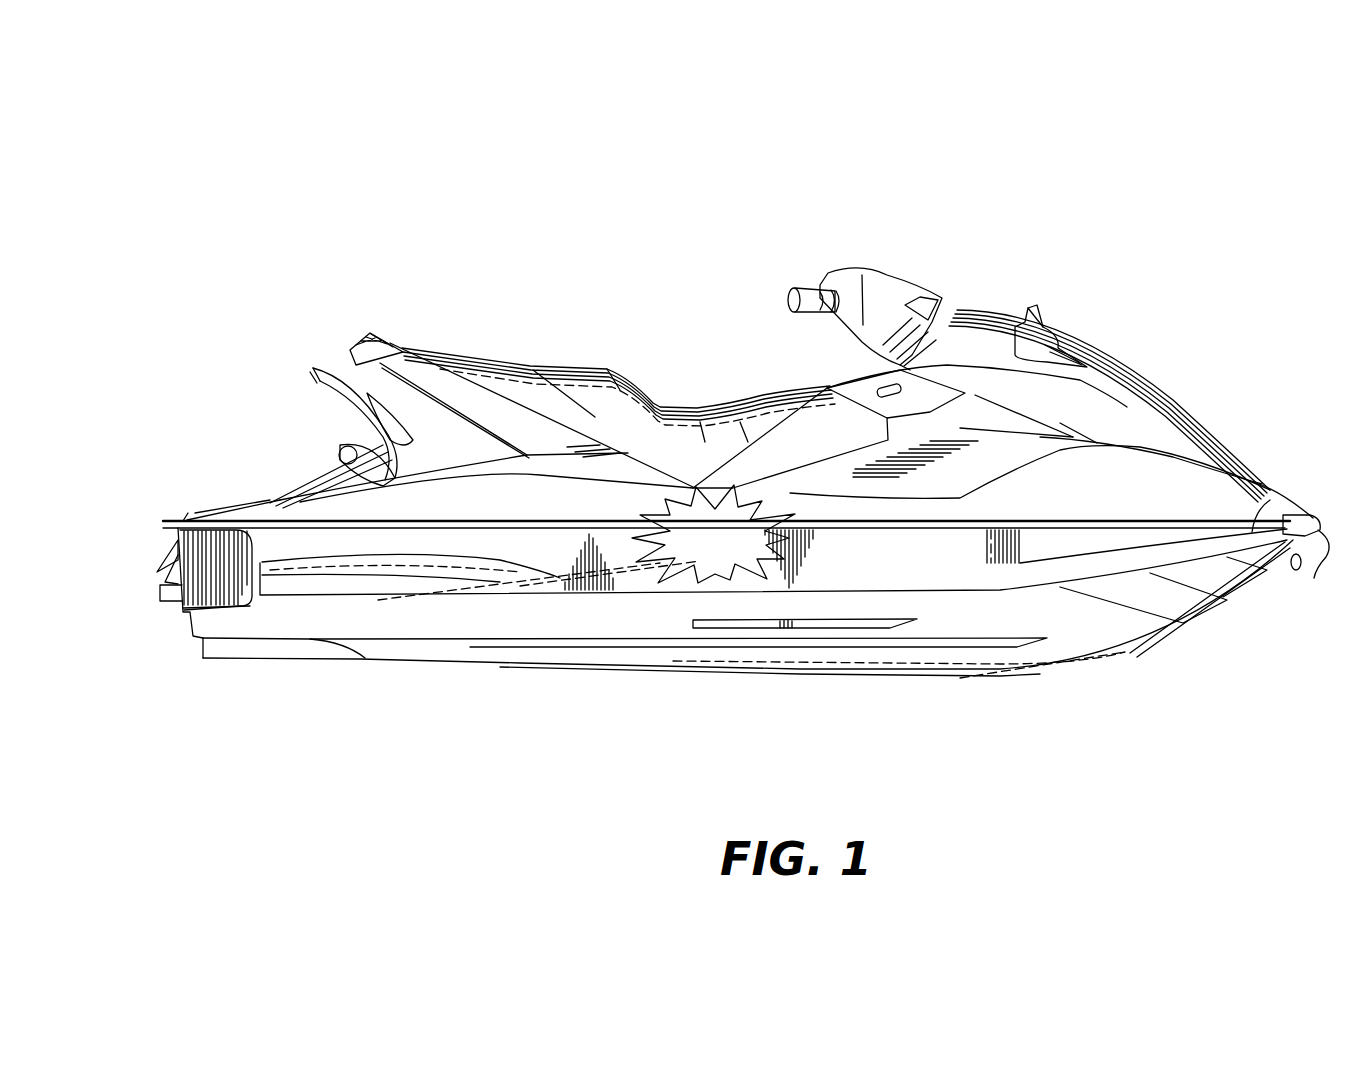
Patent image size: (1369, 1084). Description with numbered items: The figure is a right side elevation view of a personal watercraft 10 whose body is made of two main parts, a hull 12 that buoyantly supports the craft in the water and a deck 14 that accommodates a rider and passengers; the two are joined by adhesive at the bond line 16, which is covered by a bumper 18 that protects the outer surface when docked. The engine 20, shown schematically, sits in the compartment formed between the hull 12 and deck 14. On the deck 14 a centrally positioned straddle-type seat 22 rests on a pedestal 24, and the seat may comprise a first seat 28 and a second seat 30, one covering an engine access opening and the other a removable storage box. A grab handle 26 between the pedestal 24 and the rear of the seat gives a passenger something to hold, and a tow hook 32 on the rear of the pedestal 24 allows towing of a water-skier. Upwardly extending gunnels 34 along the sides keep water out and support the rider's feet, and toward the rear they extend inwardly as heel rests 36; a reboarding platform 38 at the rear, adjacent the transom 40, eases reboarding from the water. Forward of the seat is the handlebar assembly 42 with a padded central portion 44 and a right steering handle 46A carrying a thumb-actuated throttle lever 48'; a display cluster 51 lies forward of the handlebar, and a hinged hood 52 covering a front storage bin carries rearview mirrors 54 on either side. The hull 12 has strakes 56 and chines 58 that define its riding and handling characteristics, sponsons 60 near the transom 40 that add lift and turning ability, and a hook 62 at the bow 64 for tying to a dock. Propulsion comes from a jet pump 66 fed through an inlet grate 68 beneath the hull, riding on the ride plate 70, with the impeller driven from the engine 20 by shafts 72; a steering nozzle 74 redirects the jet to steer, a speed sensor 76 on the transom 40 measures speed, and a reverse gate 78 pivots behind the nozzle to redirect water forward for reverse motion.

The personal watercraft 10 is at (1142, 232).
The hull 12 is at (455, 712).
The deck 14 is at (1222, 414).
The bond line 16 is at (1272, 488).
The bumper 18 is at (1318, 560).
The engine 20 is at (713, 534).
The straddle-type seat 22 is at (720, 430).
The pedestal 24 is at (590, 426).
The grab handle 26 is at (355, 418).
The first seat 28 is at (650, 408).
The second seat 30 is at (500, 366).
The tow hook 32 is at (342, 450).
The gunnels 34 is at (486, 480).
The heel rests 36 is at (243, 500).
The reboarding platform 38 is at (198, 502).
The transom 40 is at (150, 555).
The handlebar assembly 42 is at (886, 253).
The central portion 44 is at (842, 264).
The right steering handle 46A is at (821, 295).
The thumb-actuated throttle lever 48' is at (796, 284).
The display cluster 51 is at (1022, 310).
The hood 52 is at (1107, 377).
The rearview mirrors 54 is at (1037, 342).
The strake 56 is at (895, 630).
The chine 58 is at (1000, 590).
The sponsons 60 is at (310, 590).
The hook 62 is at (1297, 574).
The bow 64 is at (1255, 638).
The jet pump 66 is at (168, 616).
The inlet grate 68 is at (365, 662).
The ride plate 70 is at (253, 652).
The shafts 72 is at (540, 585).
The steering nozzle 74 is at (160, 590).
The speed sensor 76 is at (188, 624).
The reverse gate 78 is at (172, 550).